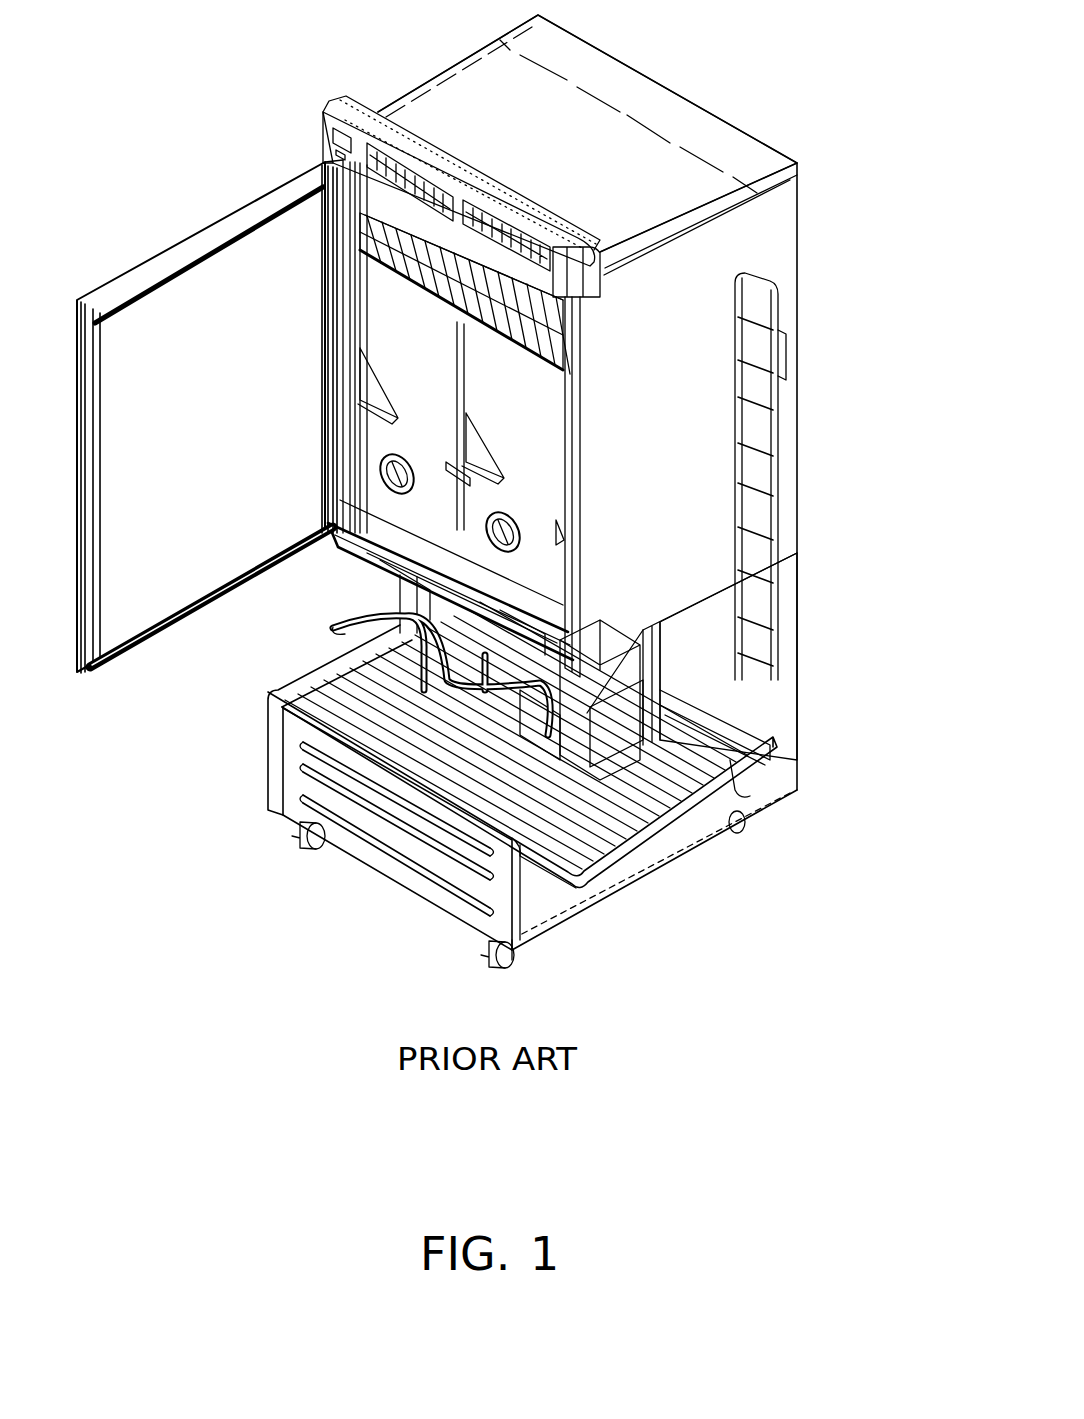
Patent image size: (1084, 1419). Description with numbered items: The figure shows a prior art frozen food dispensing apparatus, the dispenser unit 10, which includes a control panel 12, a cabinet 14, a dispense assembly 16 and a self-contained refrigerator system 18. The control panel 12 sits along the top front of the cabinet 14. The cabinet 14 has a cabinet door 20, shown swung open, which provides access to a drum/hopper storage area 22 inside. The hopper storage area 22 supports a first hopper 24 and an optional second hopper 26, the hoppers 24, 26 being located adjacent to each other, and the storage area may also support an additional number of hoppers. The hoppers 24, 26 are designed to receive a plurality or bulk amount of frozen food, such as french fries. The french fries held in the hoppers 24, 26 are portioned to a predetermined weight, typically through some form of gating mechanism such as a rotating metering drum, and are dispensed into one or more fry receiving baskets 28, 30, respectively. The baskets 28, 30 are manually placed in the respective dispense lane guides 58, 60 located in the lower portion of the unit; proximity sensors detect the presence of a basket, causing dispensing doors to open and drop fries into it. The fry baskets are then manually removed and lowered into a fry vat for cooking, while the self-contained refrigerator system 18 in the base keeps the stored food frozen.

The dispenser unit 10 is at (770, 70).
The control panel 12 is at (510, 225).
The cabinet 14 is at (768, 232).
The dispense assembly 16 is at (683, 681).
The self-contained refrigerator system 18 is at (298, 773).
The cabinet door 20 is at (97, 292).
The hopper storage area 22 is at (572, 354).
The first hopper 24 is at (418, 398).
The second hopper 26 is at (535, 456).
The fry receiving basket 28 is at (488, 658).
The fry receiving basket 30 is at (586, 718).
The dispense lane guide 58 is at (406, 675).
The dispense lane guide 60 is at (617, 803).